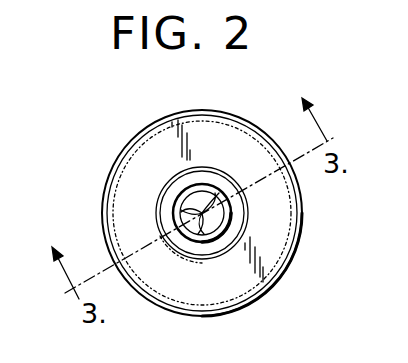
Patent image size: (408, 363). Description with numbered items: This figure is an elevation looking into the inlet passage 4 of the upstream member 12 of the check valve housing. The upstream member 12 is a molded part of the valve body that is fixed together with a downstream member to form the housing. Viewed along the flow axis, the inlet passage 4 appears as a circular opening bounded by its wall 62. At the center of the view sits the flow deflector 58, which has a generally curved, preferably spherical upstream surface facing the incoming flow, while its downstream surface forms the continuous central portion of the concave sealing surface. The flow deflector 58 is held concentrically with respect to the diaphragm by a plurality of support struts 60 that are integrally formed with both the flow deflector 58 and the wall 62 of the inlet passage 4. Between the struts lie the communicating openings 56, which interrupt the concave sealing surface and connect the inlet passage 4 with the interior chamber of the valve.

The inlet passage 4 is at (209, 187).
The upstream member 12 is at (108, 163).
The communicating openings 56 is at (190, 200).
The flow deflector 58 is at (247, 212).
The support struts 60 is at (218, 196).
The wall of inlet passage 62 is at (195, 240).